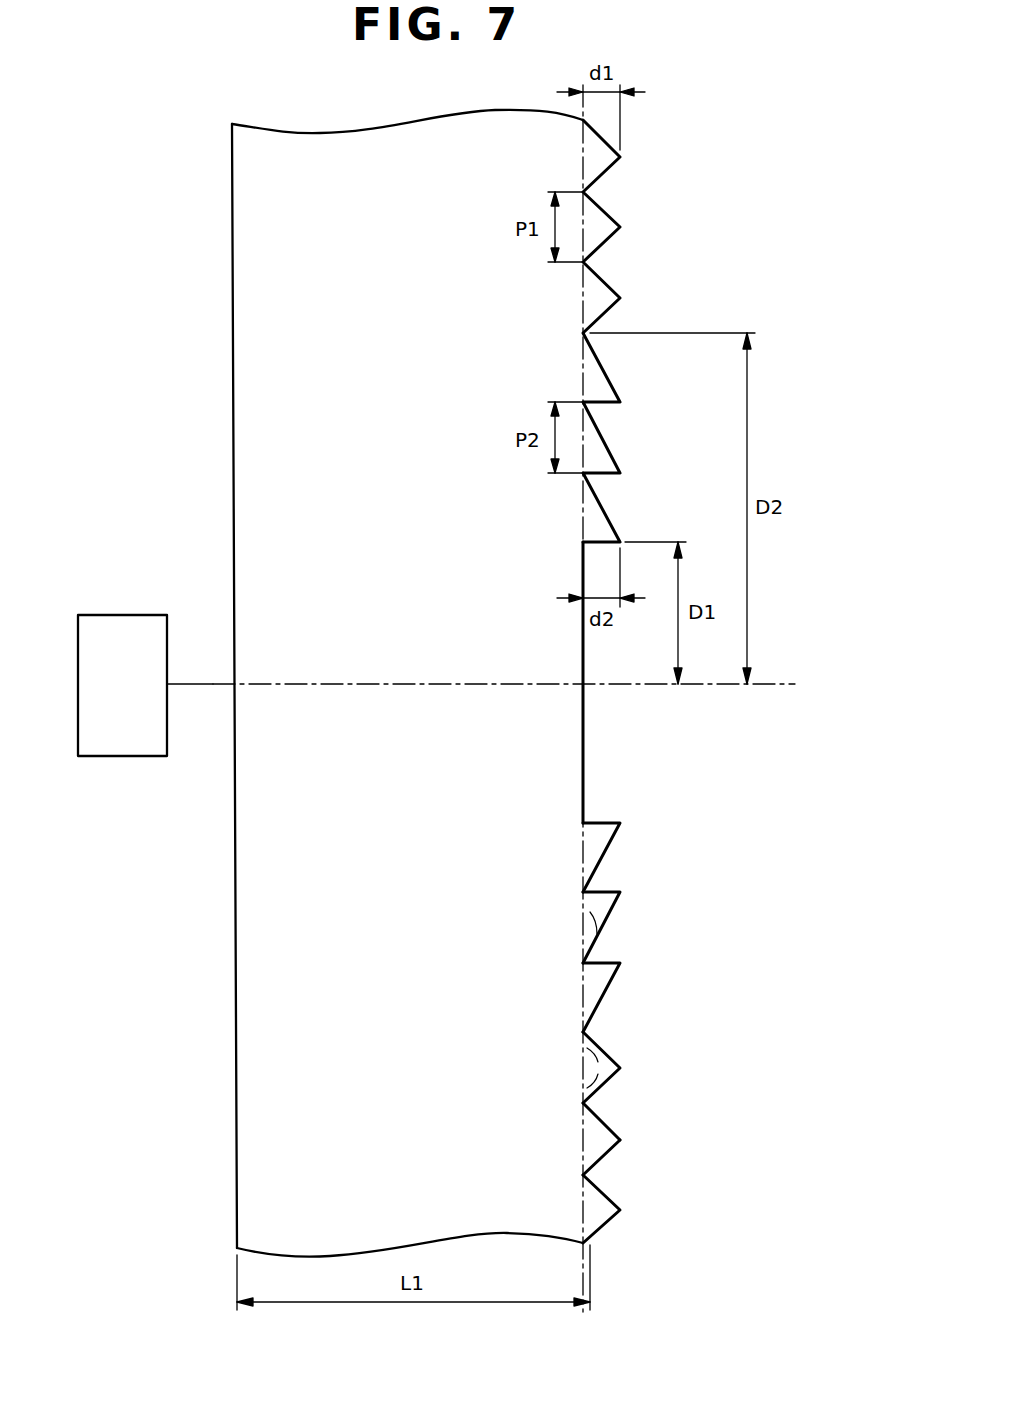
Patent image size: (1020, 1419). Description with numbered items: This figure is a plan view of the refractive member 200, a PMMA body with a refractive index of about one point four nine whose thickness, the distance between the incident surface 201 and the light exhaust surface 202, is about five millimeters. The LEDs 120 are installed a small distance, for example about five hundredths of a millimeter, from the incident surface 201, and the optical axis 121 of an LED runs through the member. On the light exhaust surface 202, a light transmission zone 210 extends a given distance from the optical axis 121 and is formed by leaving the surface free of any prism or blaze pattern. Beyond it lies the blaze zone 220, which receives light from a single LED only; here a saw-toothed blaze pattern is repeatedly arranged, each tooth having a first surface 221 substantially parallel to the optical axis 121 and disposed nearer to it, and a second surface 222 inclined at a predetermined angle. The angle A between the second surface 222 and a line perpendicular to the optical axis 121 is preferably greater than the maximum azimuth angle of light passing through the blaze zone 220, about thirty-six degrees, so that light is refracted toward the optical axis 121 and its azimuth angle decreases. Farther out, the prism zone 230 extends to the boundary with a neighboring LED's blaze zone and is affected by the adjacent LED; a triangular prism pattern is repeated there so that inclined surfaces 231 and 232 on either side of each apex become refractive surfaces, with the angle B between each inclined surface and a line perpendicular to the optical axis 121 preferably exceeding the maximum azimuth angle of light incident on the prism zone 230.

The refractive member 200 is at (416, 687).
The incident surface 201 is at (237, 1083).
The light exhaust surface 202 is at (598, 1226).
The LEDs 120 is at (110, 614).
The optical axis 121 is at (795, 684).
The light transmission zone 210 is at (598, 742).
The blaze zone 220 is at (671, 893).
The first surface 221 is at (592, 887).
The second surface 222 is at (607, 928).
The prism zone 230 is at (673, 1116).
The inclined surface 231 is at (612, 1113).
The inclined surface 232 is at (612, 1165).
The angle A is at (590, 914).
The angle B is at (537, 1066).